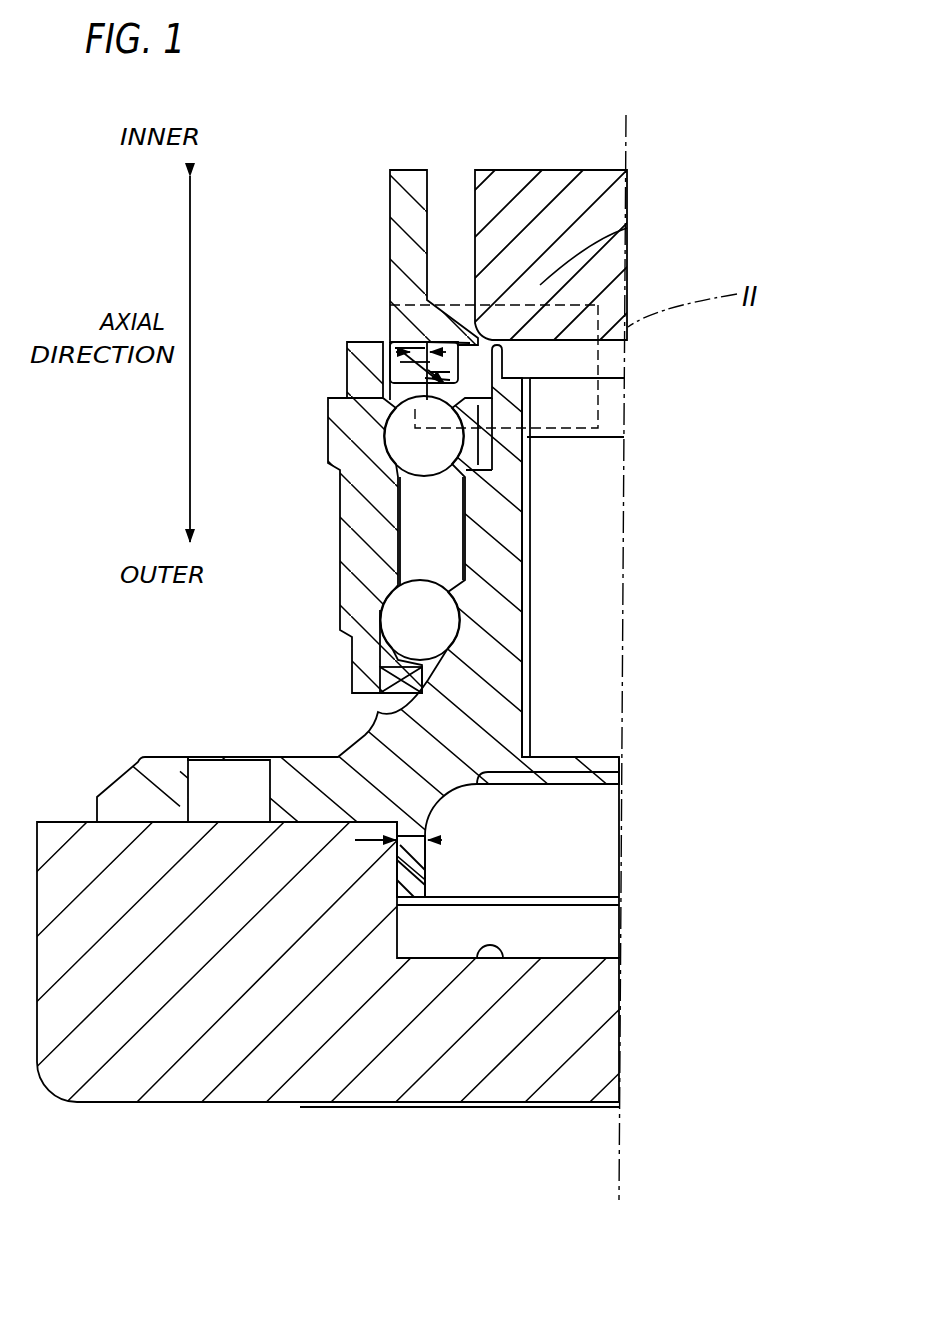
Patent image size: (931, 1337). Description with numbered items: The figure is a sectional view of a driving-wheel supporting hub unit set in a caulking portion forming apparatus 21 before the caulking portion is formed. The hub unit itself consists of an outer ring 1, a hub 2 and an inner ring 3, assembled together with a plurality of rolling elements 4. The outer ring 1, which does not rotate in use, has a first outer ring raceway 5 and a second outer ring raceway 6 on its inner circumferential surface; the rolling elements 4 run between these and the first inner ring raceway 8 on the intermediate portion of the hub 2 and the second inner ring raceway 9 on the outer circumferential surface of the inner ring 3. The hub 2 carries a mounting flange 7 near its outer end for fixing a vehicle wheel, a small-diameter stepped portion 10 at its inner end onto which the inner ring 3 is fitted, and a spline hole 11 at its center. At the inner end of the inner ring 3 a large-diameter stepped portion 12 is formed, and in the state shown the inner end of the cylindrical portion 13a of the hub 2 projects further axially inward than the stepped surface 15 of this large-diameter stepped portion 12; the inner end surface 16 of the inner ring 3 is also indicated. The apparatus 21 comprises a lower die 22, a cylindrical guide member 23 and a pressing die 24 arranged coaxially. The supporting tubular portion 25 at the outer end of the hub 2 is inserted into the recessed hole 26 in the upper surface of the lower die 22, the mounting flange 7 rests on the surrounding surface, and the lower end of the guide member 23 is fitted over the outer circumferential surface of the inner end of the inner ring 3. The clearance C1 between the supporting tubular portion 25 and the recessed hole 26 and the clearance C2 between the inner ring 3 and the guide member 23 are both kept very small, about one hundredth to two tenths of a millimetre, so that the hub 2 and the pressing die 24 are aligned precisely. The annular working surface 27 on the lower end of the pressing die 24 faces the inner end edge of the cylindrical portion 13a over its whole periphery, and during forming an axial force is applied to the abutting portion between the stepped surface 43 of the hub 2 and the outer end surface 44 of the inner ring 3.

The outer ring 1 is at (366, 527).
The hub 2 is at (374, 746).
The inner ring 3 is at (347, 365).
The rolling elements 4 is at (400, 435).
The first outer ring raceway 5 is at (365, 603).
The second outer ring raceway 6 is at (338, 483).
The mounting flange 7 is at (138, 780).
The first inner ring raceway 8 is at (447, 648).
The second inner ring raceway 9 is at (527, 448).
The small-diameter stepped portion 10 is at (492, 416).
The spline hole 11 is at (530, 545).
The large-diameter stepped portion 12 is at (413, 360).
The cylindrical portion 13a is at (505, 350).
The stepped surface 15 is at (408, 345).
The inner end surface 16 is at (430, 380).
The caulking portion forming apparatus 21 is at (358, 150).
The lower die (receiving table) 22 is at (188, 1005).
The guide member 23 is at (412, 185).
The pressing die 24 is at (522, 212).
The supporting tubular portion 25 is at (410, 878).
The recessed hole 26 is at (490, 962).
The working surface 27 is at (628, 233).
The stepped surface 43 is at (520, 480).
The outer end surface 44 is at (458, 492).
The clearance C1 is at (430, 836).
The clearance C2 is at (420, 347).